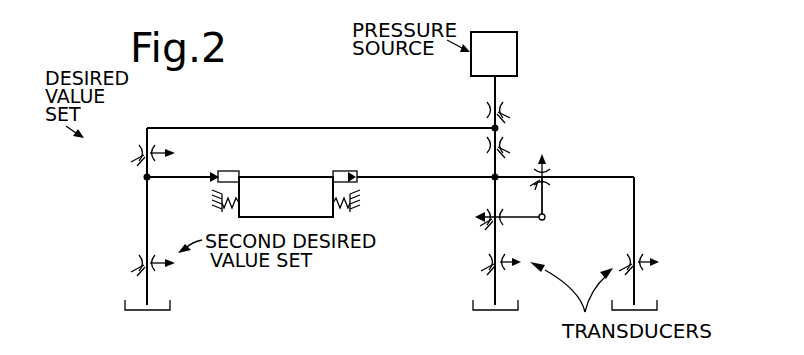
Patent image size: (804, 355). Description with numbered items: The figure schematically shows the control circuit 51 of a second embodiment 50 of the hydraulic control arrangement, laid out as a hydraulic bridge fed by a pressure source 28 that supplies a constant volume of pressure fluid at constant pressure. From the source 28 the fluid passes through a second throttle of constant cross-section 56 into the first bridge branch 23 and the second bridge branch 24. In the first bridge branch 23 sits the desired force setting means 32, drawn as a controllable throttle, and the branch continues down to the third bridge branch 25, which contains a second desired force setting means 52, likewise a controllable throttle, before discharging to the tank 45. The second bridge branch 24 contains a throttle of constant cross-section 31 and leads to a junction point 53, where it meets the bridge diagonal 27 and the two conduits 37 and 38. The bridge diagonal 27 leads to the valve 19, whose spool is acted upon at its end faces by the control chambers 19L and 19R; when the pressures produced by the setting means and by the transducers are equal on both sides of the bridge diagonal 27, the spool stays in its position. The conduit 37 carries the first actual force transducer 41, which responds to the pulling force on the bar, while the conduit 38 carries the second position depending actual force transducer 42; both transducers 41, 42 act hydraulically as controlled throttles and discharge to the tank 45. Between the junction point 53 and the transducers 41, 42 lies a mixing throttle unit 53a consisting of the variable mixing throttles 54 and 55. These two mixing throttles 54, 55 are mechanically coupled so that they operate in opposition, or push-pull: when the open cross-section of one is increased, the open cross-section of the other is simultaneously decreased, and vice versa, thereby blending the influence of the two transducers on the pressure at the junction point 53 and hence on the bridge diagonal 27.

The valve 19 is at (284, 198).
The control chamber 19L is at (222, 171).
The control chamber 19R is at (344, 171).
The first bridge branch 23 is at (183, 128).
The second bridge branch 24 is at (500, 130).
The third bridge branch 25 is at (147, 200).
The bridge diagonal 27 is at (180, 180).
The pressure source 28 is at (506, 58).
The throttle of constant cross-section 31 is at (504, 146).
The desired force setting means 32 is at (140, 153).
The conduit 37 is at (492, 195).
The conduit 38 is at (636, 190).
The first actual force transducer 41 is at (488, 262).
The second position depending actual force transducer 42 is at (648, 262).
The tank 45 is at (170, 304).
The second embodiment 50 is at (570, 108).
The control circuit 51 is at (382, 104).
The second desired force setting means 52 is at (140, 263).
The junction point 53 is at (491, 176).
The mixing throttle unit 53a is at (550, 200).
The mixing throttle 54 is at (488, 213).
The mixing throttle 55 is at (548, 172).
The second throttle of constant cross-section 56 is at (504, 110).